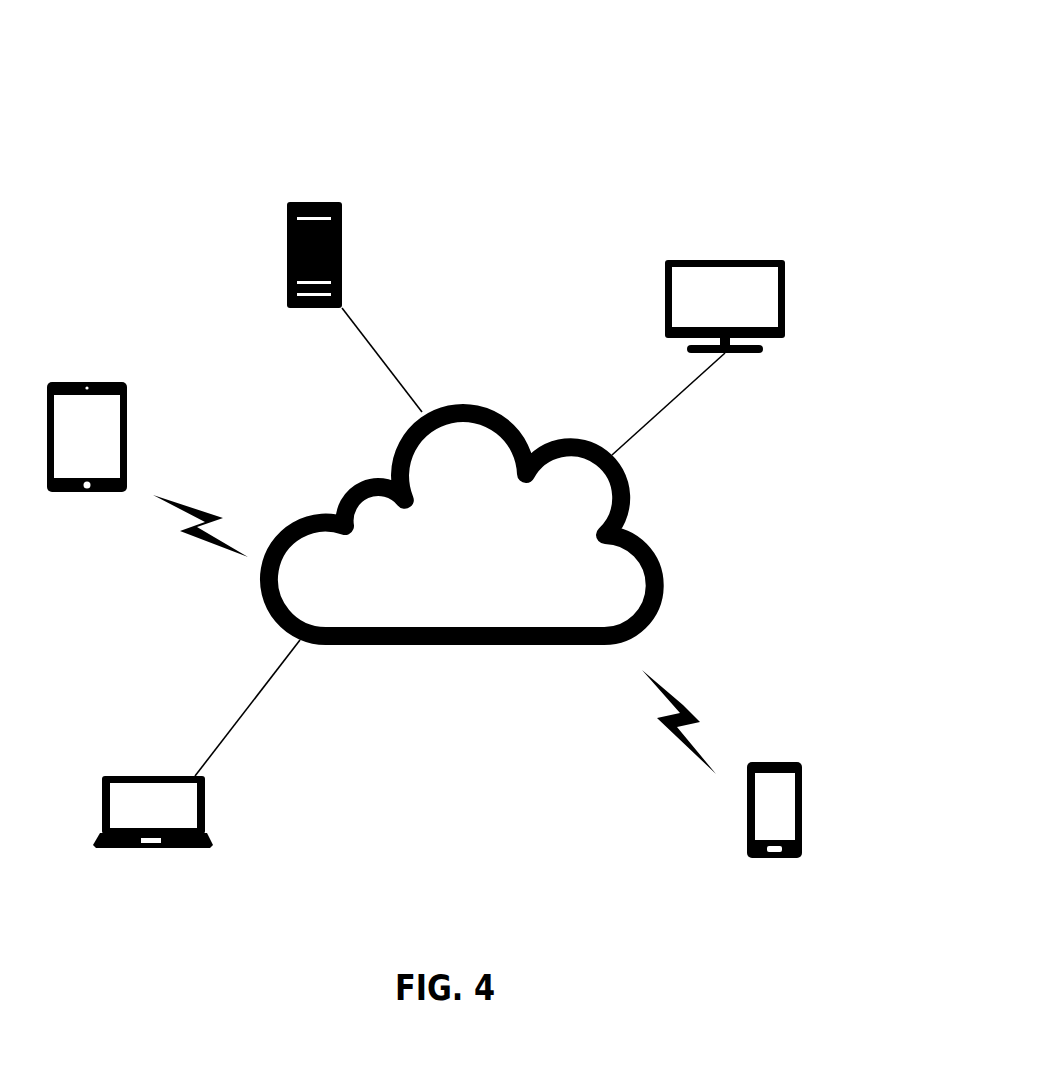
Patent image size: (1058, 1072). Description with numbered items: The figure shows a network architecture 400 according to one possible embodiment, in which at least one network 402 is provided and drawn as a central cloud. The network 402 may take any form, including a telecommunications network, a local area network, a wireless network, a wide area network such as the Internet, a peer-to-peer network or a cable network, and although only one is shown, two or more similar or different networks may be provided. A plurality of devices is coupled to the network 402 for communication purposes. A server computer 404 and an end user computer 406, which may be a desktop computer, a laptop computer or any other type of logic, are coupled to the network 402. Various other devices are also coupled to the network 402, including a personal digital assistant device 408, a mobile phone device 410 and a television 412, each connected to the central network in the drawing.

The network architecture 400 is at (86, 74).
The network 402 is at (472, 646).
The server computer 404 is at (316, 200).
The end user computer 406 is at (148, 775).
The personal digital assistant (PDA) device 408 is at (88, 380).
The mobile phone device 410 is at (766, 760).
The television 412 is at (728, 258).